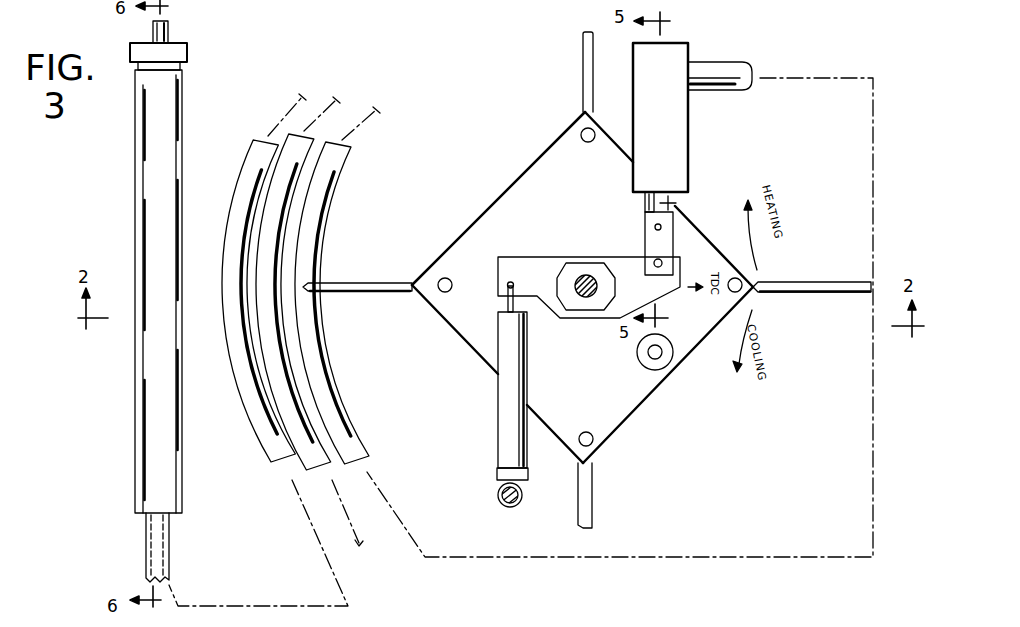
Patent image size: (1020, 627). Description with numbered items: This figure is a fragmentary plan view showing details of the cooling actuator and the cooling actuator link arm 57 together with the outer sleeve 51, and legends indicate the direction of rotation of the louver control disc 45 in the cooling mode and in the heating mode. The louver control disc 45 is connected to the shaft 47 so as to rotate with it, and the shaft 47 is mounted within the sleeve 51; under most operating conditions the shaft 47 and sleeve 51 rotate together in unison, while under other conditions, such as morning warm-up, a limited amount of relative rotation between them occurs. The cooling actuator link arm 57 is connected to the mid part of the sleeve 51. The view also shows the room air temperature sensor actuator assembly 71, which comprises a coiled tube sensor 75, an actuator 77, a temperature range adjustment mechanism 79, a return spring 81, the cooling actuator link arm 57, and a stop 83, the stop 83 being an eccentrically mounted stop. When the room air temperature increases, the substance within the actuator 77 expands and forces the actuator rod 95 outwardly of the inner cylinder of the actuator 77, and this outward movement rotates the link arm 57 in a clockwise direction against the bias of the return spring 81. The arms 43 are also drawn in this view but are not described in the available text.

The arm 43 is at (380, 292).
The louver control disc 45 is at (582, 280).
The shaft 47 is at (583, 270).
The sleeve 51 is at (603, 310).
The cooling actuator link arm 57 is at (529, 256).
The room air temperature sensor actuator assembly 71 is at (229, 94).
The coiled tube sensor 75 is at (322, 223).
The actuator 77 is at (674, 100).
The temperature range adjustment mechanism 79 is at (178, 130).
The return spring 81 is at (498, 410).
The stop 83 is at (675, 320).
The actuator rod 95 is at (680, 205).